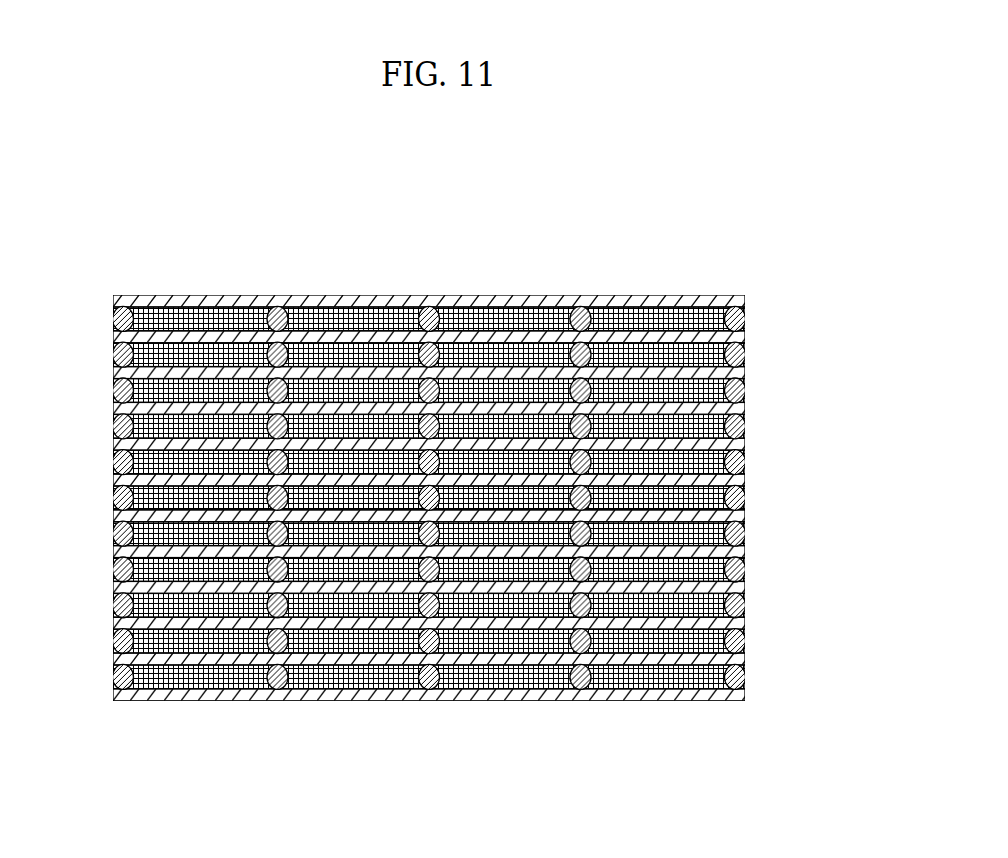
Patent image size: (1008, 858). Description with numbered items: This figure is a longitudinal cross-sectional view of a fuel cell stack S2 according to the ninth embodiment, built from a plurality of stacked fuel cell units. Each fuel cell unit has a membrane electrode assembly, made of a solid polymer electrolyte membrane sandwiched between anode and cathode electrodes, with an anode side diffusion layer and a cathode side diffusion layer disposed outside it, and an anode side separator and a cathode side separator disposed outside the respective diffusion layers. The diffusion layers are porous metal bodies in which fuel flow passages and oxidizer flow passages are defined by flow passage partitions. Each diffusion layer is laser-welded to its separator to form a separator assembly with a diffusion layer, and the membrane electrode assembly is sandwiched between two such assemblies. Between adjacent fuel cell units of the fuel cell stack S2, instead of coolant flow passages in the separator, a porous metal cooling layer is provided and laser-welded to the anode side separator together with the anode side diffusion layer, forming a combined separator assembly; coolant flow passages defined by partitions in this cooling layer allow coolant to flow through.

The fuel cell stack S2 is at (497, 240).